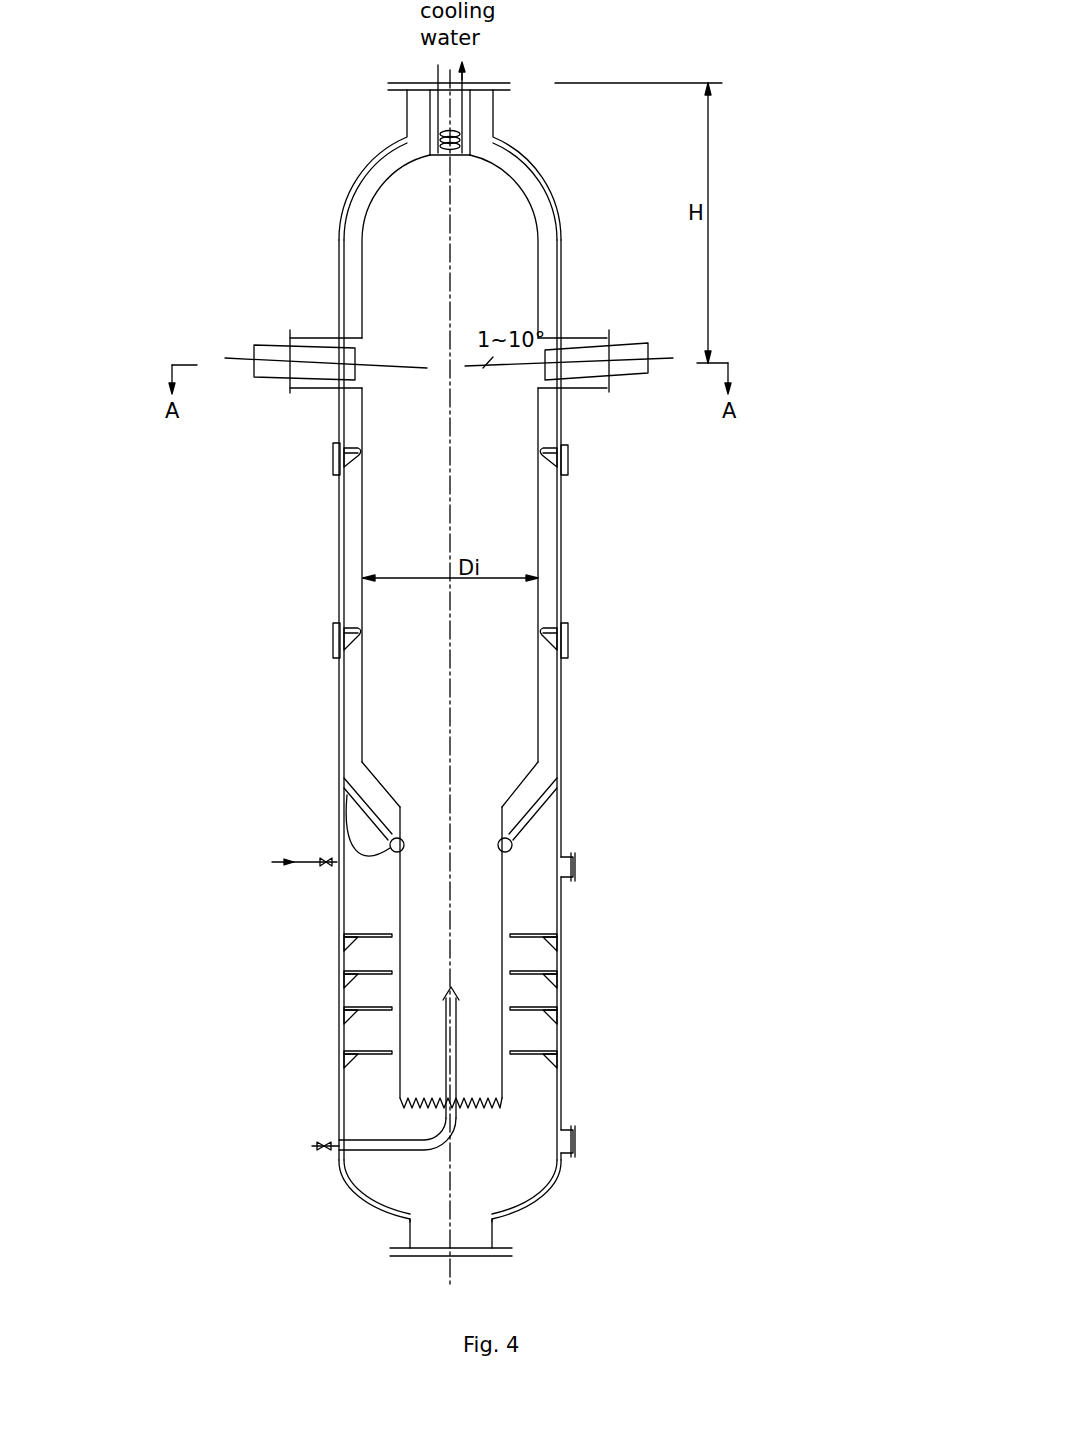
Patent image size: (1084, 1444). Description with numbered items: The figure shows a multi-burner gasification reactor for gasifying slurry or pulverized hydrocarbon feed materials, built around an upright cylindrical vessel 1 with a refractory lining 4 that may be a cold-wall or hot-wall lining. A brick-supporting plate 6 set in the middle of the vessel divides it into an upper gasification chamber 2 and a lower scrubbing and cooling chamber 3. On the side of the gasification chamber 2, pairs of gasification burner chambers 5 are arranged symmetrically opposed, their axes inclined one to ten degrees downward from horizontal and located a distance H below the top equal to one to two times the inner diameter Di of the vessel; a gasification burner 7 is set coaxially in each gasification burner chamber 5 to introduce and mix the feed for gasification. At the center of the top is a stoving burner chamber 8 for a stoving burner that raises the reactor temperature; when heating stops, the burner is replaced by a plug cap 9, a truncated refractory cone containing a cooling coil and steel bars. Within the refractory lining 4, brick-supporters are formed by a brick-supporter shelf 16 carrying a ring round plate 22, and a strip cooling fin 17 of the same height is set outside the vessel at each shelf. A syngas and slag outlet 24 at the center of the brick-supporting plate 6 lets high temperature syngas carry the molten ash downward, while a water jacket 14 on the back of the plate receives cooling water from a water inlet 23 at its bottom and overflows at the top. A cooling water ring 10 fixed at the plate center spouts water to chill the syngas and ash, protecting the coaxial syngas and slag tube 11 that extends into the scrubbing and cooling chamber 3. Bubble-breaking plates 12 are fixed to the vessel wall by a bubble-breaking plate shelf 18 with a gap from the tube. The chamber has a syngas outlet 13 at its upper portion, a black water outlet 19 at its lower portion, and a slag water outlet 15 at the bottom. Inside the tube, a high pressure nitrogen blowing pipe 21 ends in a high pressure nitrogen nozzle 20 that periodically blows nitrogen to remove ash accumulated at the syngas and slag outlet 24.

The upright cylindrical vessel 1 is at (560, 690).
The gasification chamber 2 is at (430, 270).
The scrubbing and cooling chamber 3 is at (520, 893).
The refractory lining 4 is at (353, 550).
The gasification burner chamber 5 is at (580, 338).
The brick-supporting plate 6 is at (387, 840).
The gasification burner 7 is at (640, 353).
The stoving burner chamber 8 is at (430, 148).
The plug cap 9 is at (443, 128).
The cooling water ring 10 is at (394, 850).
The syngas and slag tube 11 is at (505, 920).
The bubble-breaking plates 12 is at (528, 1007).
The syngas outlet 13 is at (577, 865).
The water jacket 14 is at (362, 813).
The slag water outlet 15 is at (451, 1259).
The brick-supporter shelf 16 is at (350, 460).
The strip cooling fin 17 is at (563, 443).
The bubble-breaking plate shelf 18 is at (552, 945).
The black water outlet 19 is at (567, 1150).
The high pressure nitrogen nozzle 20 is at (445, 992).
The high pressure nitrogen blowing pipe 21 is at (452, 1120).
The ring round plate 22 is at (350, 452).
The water inlet 23 is at (291, 863).
The syngas and slag outlet 24 is at (440, 823).